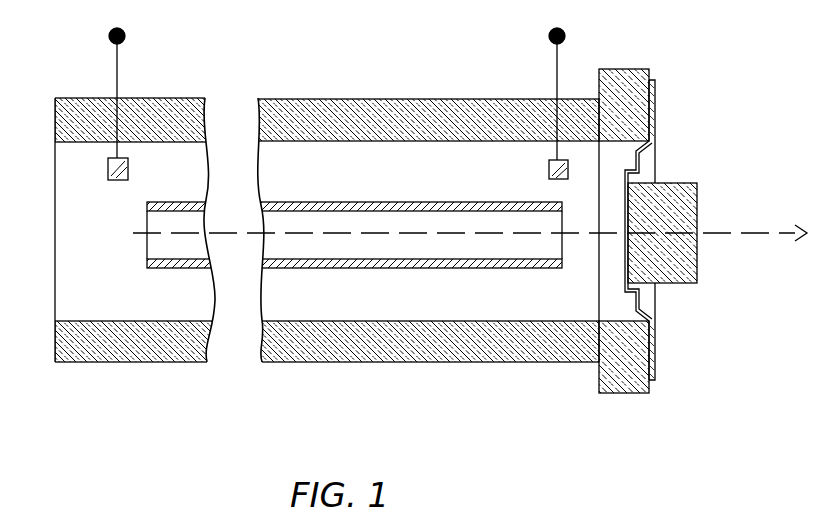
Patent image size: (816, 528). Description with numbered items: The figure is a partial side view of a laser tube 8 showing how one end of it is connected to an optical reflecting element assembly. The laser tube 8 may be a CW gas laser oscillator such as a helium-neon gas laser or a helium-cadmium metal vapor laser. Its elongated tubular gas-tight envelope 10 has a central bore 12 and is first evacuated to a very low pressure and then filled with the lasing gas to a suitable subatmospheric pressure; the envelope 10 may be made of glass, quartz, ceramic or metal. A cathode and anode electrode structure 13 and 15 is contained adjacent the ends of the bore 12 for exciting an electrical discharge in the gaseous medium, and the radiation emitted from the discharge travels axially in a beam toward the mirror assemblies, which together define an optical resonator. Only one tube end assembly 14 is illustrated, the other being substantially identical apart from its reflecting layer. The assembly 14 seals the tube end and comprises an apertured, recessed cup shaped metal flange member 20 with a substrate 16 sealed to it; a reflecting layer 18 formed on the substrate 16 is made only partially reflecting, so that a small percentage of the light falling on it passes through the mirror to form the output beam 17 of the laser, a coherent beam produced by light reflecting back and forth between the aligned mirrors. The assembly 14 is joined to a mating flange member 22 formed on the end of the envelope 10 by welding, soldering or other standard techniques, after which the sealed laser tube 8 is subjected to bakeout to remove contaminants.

The laser tube 8 is at (351, 96).
The tubular gas-tight envelope 10 is at (328, 362).
The central bore 12 is at (300, 270).
The cathode electrode structure 13 is at (108, 168).
The tube end assembly 14 is at (661, 128).
The anode electrode structure 15 is at (549, 174).
The substrate 16 is at (698, 198).
The output beam 17 is at (763, 232).
The reflecting layer 18 is at (624, 244).
The metal flange member 20 is at (656, 363).
The mating flange member 22 is at (613, 393).